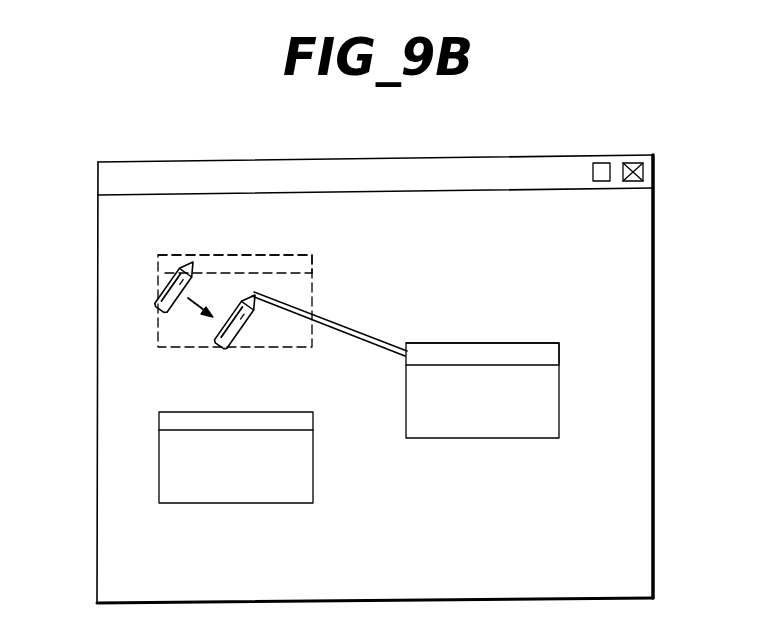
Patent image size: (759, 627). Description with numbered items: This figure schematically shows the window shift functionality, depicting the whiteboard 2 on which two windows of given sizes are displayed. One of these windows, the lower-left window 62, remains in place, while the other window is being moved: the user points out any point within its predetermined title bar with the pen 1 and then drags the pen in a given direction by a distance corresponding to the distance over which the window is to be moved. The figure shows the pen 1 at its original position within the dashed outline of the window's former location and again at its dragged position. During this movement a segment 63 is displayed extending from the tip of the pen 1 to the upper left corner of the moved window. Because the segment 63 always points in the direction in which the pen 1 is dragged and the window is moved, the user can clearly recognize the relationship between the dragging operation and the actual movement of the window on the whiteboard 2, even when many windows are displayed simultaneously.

The pen 1 is at (160, 296).
The whiteboard 2 is at (497, 156).
The window 62 is at (173, 464).
The segment 63 is at (362, 332).